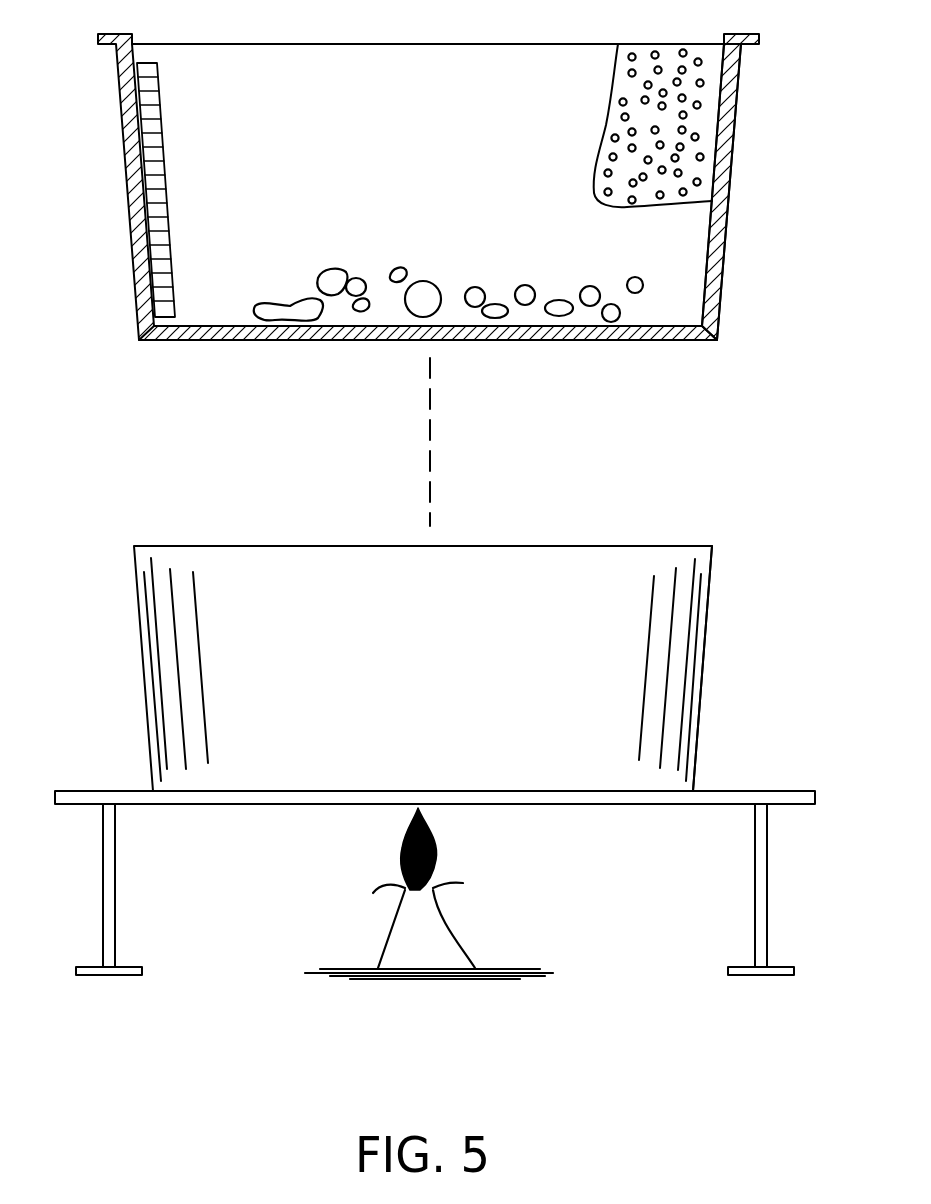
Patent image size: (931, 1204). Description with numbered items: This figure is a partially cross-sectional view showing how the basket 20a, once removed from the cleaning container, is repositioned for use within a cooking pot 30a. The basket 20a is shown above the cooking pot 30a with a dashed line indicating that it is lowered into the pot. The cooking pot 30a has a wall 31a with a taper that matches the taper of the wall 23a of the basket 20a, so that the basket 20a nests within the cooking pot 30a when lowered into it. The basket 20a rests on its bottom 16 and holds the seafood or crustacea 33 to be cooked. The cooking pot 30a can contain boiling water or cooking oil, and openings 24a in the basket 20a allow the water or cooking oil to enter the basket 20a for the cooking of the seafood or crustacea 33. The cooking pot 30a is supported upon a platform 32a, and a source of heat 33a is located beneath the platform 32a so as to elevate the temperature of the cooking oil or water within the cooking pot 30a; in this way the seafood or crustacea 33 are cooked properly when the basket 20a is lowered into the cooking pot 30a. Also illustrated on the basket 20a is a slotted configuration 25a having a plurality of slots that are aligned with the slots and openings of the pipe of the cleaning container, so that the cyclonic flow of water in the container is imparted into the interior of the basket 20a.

The bottom 16 is at (627, 338).
The basket 20a is at (730, 212).
The wall of the basket 23a is at (703, 152).
The openings 24a is at (630, 117).
The slotted configuration 25a is at (166, 152).
The seafood or crustacea 33 is at (437, 288).
The cooking pot 30a is at (691, 665).
The wall of the cooking pot 31a is at (710, 602).
The platform 32a is at (728, 788).
The source of heat 33a is at (450, 923).